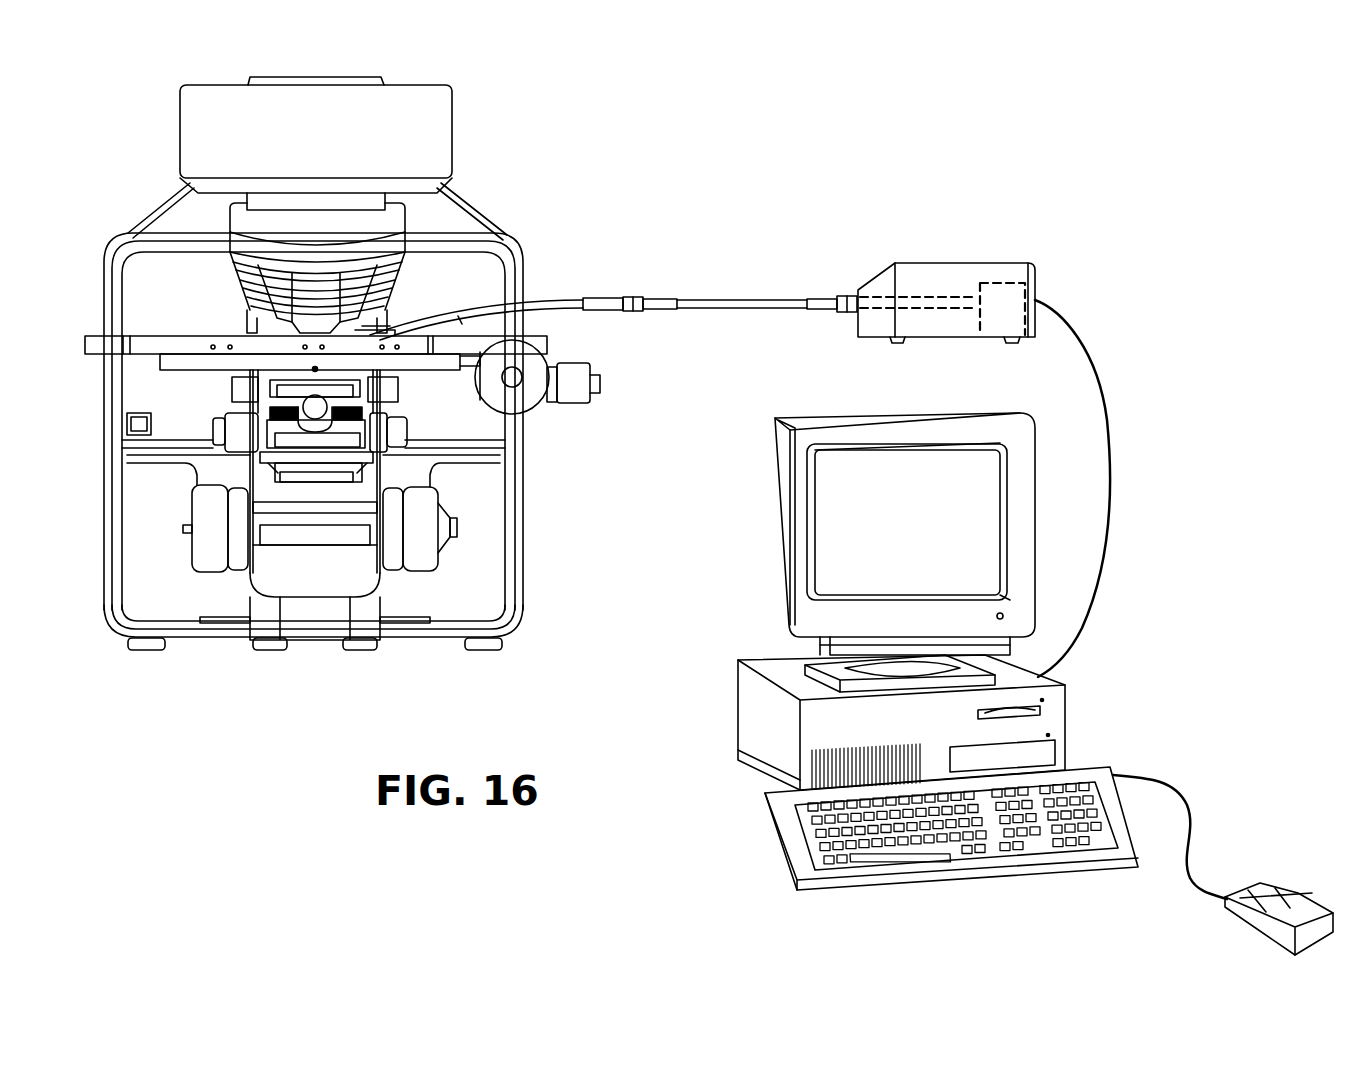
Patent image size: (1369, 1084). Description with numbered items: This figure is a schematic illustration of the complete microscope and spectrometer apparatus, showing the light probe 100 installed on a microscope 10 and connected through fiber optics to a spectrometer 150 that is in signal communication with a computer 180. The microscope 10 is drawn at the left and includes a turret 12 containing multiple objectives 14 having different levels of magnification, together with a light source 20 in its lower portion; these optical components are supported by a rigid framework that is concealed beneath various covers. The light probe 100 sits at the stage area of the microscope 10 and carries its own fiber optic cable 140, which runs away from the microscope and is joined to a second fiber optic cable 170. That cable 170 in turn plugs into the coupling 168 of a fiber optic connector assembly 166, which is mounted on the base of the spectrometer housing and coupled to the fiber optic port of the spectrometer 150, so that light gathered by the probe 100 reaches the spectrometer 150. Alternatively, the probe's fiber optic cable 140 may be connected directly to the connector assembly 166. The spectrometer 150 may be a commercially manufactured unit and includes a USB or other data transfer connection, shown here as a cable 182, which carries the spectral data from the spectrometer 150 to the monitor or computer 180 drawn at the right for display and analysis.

The microscope 10 is at (500, 190).
The turret 12 is at (390, 250).
The objectives 14 is at (313, 283).
The light source 20 is at (312, 523).
The light probe 100 is at (370, 336).
The fiber optic cable 140 is at (558, 300).
The fiber optic cable 170 is at (722, 300).
The coupling 168 is at (848, 296).
The fiber optic connector assembly 166 is at (930, 297).
The spectrometer 150 is at (996, 283).
The cable 182 is at (1103, 412).
The computer 180 is at (1085, 678).